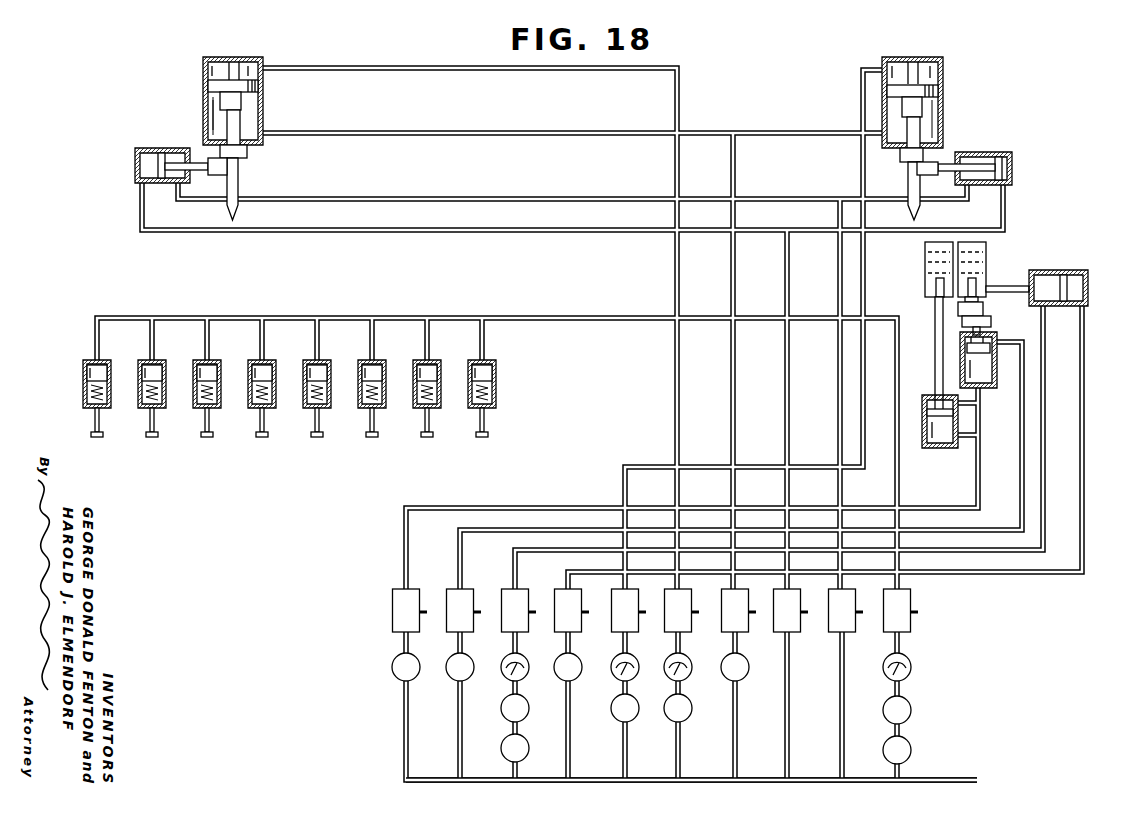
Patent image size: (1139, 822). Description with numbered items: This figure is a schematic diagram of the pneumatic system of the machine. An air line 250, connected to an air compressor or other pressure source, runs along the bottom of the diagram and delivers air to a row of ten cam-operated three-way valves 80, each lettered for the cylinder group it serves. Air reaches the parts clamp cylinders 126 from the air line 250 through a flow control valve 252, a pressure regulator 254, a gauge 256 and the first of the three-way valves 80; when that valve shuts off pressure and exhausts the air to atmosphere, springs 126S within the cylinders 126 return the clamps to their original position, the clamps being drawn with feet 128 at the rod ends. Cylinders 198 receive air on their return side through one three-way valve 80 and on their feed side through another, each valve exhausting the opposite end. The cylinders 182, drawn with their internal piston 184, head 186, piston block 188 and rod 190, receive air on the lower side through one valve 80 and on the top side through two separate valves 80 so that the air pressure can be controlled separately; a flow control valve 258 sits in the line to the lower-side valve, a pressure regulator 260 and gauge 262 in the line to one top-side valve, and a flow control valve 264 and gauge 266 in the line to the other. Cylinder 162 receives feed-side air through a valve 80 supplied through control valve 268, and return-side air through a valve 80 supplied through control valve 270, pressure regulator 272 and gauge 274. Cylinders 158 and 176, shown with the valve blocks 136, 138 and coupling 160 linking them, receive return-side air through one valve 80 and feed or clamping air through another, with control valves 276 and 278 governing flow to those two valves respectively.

The three-way valves 80 is at (656, 610).
The parts clamp cylinders 126 is at (207, 360).
The springs 126S is at (497, 402).
The foot pad 128 is at (317, 437).
The valve block 136 is at (986, 254).
The valve block 138 is at (925, 264).
The cylinder 158 is at (985, 390).
The coupling 160 is at (991, 318).
The cylinder 162 is at (1079, 270).
The cylinder 176 is at (943, 448).
The cylinders 182 is at (203, 85).
The piston 184 is at (263, 85).
The cylinder head 186 is at (236, 61).
The piston block 188 is at (220, 104).
The piston rod 190 is at (245, 125).
The cylinders 198 is at (146, 148).
The air line 250 is at (978, 778).
The flow control valve 252 is at (912, 750).
The pressure regulator 254 is at (912, 710).
The gauge 256 is at (912, 666).
The flow control valve 258 is at (742, 676).
The pressure regulator 260 is at (687, 716).
The gauge 262 is at (686, 676).
The flow control valve 264 is at (633, 716).
The pressure gauge 266 is at (632, 676).
The control valve 268 is at (578, 676).
The control valve 270 is at (525, 756).
The pressure regulator 272 is at (525, 716).
The gauge 274 is at (525, 676).
The control valve 276 is at (451, 680).
The control valve 278 is at (394, 675).